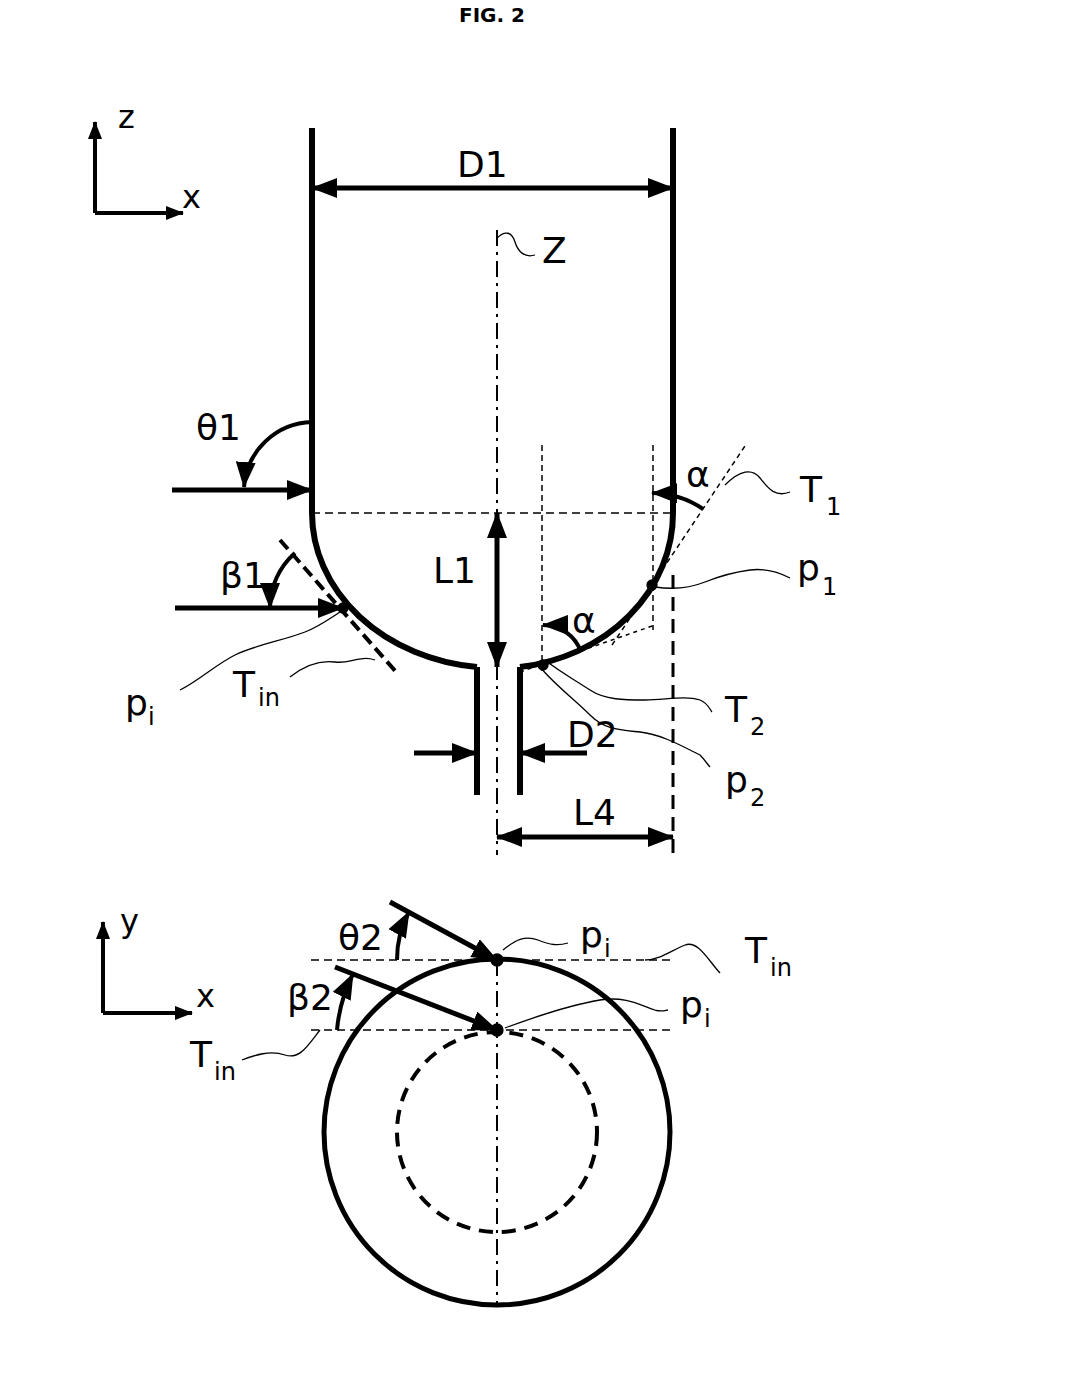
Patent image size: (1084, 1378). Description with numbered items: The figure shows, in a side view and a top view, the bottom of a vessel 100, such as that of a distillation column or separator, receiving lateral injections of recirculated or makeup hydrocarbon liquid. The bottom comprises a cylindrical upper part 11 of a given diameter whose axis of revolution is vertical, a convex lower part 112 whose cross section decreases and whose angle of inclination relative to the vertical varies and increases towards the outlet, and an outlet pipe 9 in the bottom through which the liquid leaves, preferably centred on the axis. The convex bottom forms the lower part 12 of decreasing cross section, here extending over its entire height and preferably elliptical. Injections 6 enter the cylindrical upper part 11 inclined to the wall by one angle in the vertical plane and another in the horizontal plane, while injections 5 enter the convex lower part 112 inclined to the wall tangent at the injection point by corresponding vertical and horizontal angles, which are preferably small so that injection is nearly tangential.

The vessel 100 is at (617, 716).
The cylindrical upper part 11 is at (673, 327).
The convex lower part 112 is at (625, 645).
The lower part 12 is at (598, 1145).
The outlet pipe 9 is at (477, 780).
The injections 6 is at (200, 490).
The injections 5 is at (205, 608).